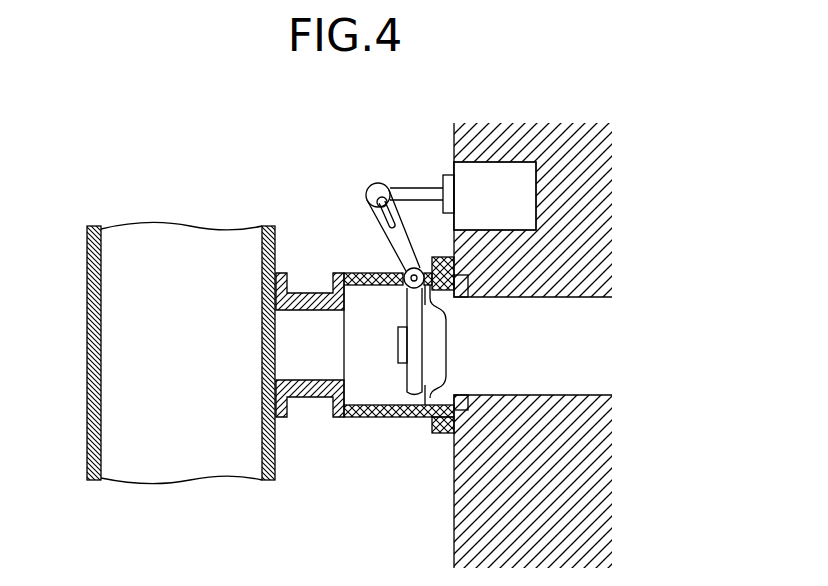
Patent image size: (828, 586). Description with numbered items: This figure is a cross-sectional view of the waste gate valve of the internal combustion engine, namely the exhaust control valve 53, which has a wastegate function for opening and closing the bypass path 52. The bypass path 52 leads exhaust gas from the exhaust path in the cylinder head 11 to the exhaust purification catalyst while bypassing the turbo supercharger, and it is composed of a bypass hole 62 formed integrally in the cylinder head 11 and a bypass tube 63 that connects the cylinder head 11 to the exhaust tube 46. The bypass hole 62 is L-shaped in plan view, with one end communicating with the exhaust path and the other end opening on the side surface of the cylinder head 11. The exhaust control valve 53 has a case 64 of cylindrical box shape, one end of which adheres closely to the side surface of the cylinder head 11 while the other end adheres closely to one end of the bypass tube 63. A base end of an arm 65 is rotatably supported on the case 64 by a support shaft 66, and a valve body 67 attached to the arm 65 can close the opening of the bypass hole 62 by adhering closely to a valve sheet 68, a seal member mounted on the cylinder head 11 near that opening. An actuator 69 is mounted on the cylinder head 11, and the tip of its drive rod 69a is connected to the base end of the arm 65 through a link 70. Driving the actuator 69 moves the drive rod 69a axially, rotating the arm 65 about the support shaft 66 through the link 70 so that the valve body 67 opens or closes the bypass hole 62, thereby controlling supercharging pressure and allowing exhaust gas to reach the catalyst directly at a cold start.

The cylinder head 11 is at (605, 188).
The exhaust tube 46 is at (90, 378).
The bypass path 52 is at (485, 332).
The exhaust control valve 53 is at (324, 174).
The bypass hole 62 is at (557, 380).
The bypass tube 63 is at (313, 398).
The case 64 is at (363, 418).
The arm 65 is at (415, 397).
The support shaft 66 is at (428, 258).
The valve body 67 is at (440, 348).
The valve sheet 68 is at (457, 277).
The actuator 69 is at (517, 170).
The drive rod 69a is at (396, 187).
The link 70 is at (387, 242).